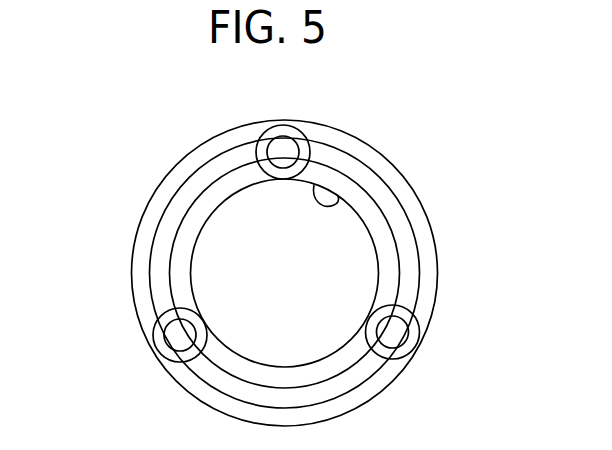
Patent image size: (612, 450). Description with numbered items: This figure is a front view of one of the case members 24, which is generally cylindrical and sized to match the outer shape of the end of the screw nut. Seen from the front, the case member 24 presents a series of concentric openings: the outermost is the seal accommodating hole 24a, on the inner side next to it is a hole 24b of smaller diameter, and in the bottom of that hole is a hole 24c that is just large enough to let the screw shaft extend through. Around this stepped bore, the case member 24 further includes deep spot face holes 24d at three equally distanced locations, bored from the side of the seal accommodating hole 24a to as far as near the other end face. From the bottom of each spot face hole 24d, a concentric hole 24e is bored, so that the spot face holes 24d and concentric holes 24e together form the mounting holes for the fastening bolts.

The case member 24 is at (163, 185).
The seal accommodating hole 24a is at (417, 247).
The hole 24b is at (382, 220).
The hole 24c is at (338, 202).
The deep spot face hole 24d is at (260, 142).
The concentric hole 24e is at (278, 148).